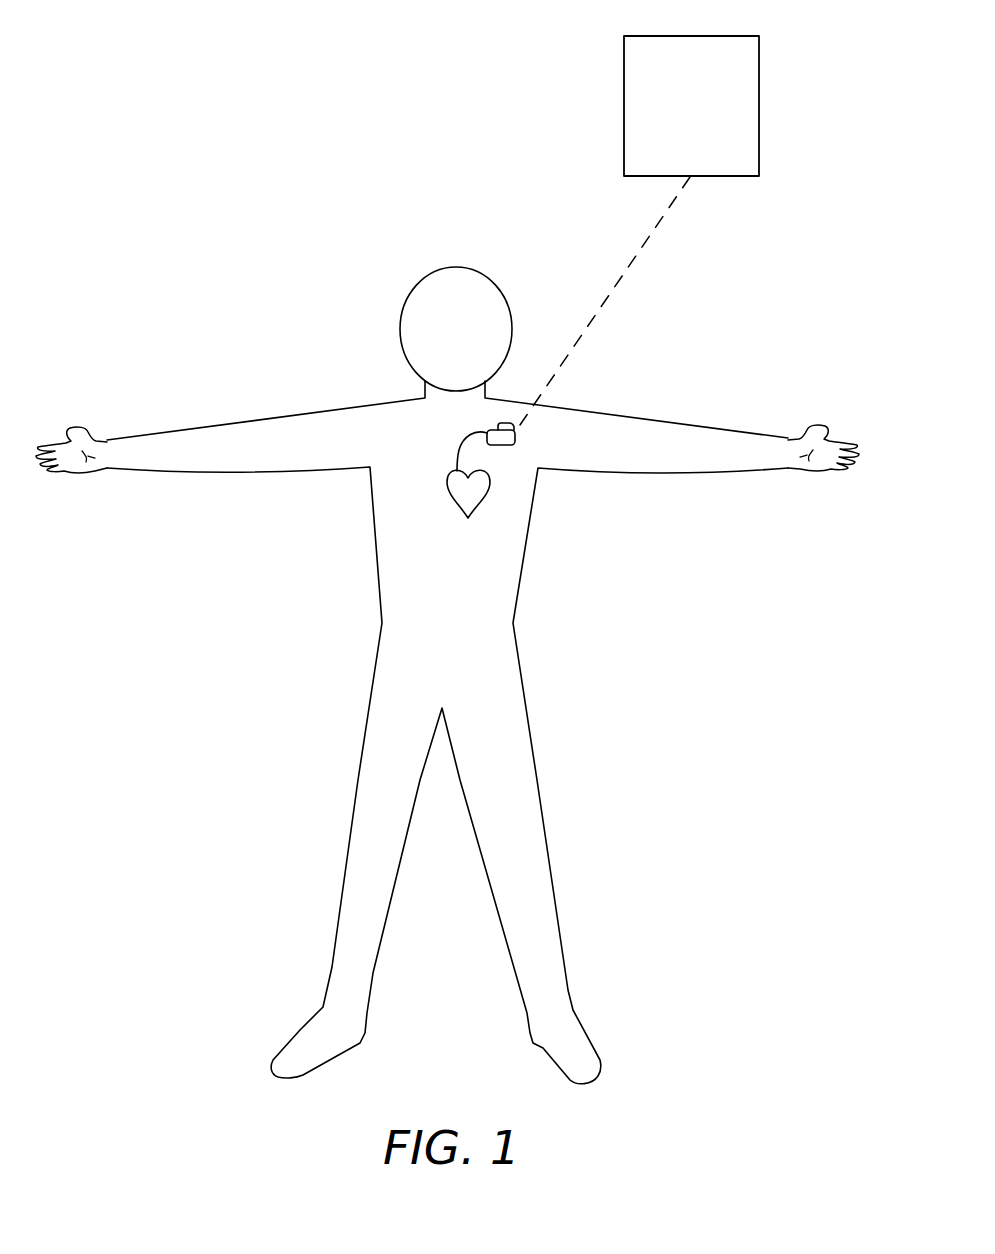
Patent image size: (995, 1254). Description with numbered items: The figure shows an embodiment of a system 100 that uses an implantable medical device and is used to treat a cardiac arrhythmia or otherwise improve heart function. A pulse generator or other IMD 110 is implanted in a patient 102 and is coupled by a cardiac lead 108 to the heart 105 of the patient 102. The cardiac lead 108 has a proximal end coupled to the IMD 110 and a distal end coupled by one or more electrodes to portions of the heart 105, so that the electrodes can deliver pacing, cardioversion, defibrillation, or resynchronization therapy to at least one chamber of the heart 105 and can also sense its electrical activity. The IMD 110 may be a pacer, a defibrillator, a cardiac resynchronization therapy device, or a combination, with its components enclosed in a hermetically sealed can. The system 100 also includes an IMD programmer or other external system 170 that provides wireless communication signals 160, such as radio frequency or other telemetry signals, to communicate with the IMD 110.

The system 100 is at (186, 41).
The patient 102 is at (383, 572).
The heart 105 is at (465, 519).
The cardiac lead 108 is at (455, 455).
The implantable medical device 110 is at (517, 439).
The wireless communication signals 160 is at (627, 272).
The external system 170 is at (760, 107).